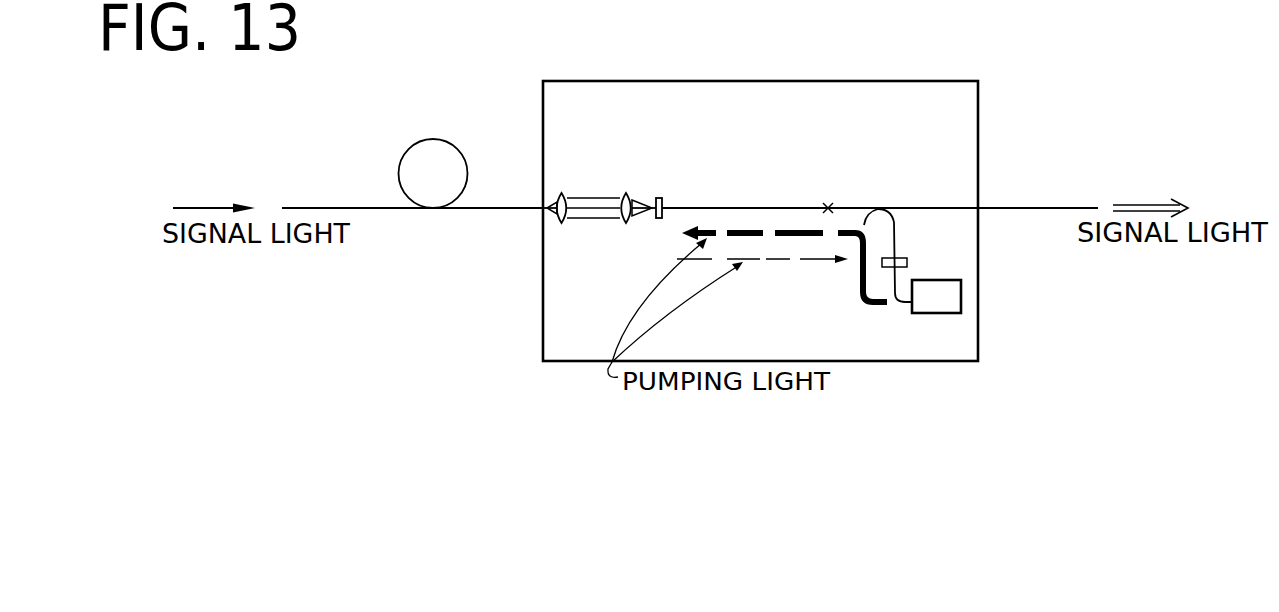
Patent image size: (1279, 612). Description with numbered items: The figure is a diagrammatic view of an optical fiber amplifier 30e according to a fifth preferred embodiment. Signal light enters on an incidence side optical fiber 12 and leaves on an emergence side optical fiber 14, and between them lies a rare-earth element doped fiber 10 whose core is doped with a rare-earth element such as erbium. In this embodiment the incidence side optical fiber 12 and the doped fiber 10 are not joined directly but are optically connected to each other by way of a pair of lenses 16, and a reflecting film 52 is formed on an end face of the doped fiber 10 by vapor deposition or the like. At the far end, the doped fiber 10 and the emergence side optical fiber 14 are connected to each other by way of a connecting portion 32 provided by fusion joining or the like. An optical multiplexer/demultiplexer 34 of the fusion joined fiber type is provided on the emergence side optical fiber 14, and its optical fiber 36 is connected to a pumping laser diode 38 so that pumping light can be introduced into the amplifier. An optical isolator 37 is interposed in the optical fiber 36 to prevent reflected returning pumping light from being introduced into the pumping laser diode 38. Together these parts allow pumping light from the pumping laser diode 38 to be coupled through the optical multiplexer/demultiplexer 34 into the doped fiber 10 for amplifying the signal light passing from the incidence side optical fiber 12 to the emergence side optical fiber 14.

The rare-earth element doped fiber 10 is at (738, 207).
The incidence side optical fiber 12 is at (433, 139).
The emergence side optical fiber 14 is at (1024, 209).
The pair of lenses 16 is at (562, 192).
The optical fiber amplifier 30e is at (776, 76).
The connecting portion 32 is at (828, 203).
The optical multiplexer/demultiplexer 34 is at (880, 209).
The optical fiber 36 is at (895, 234).
The optical isolator 37 is at (907, 262).
The pumping laser diode 38 is at (961, 303).
The reflecting film 52 is at (660, 196).